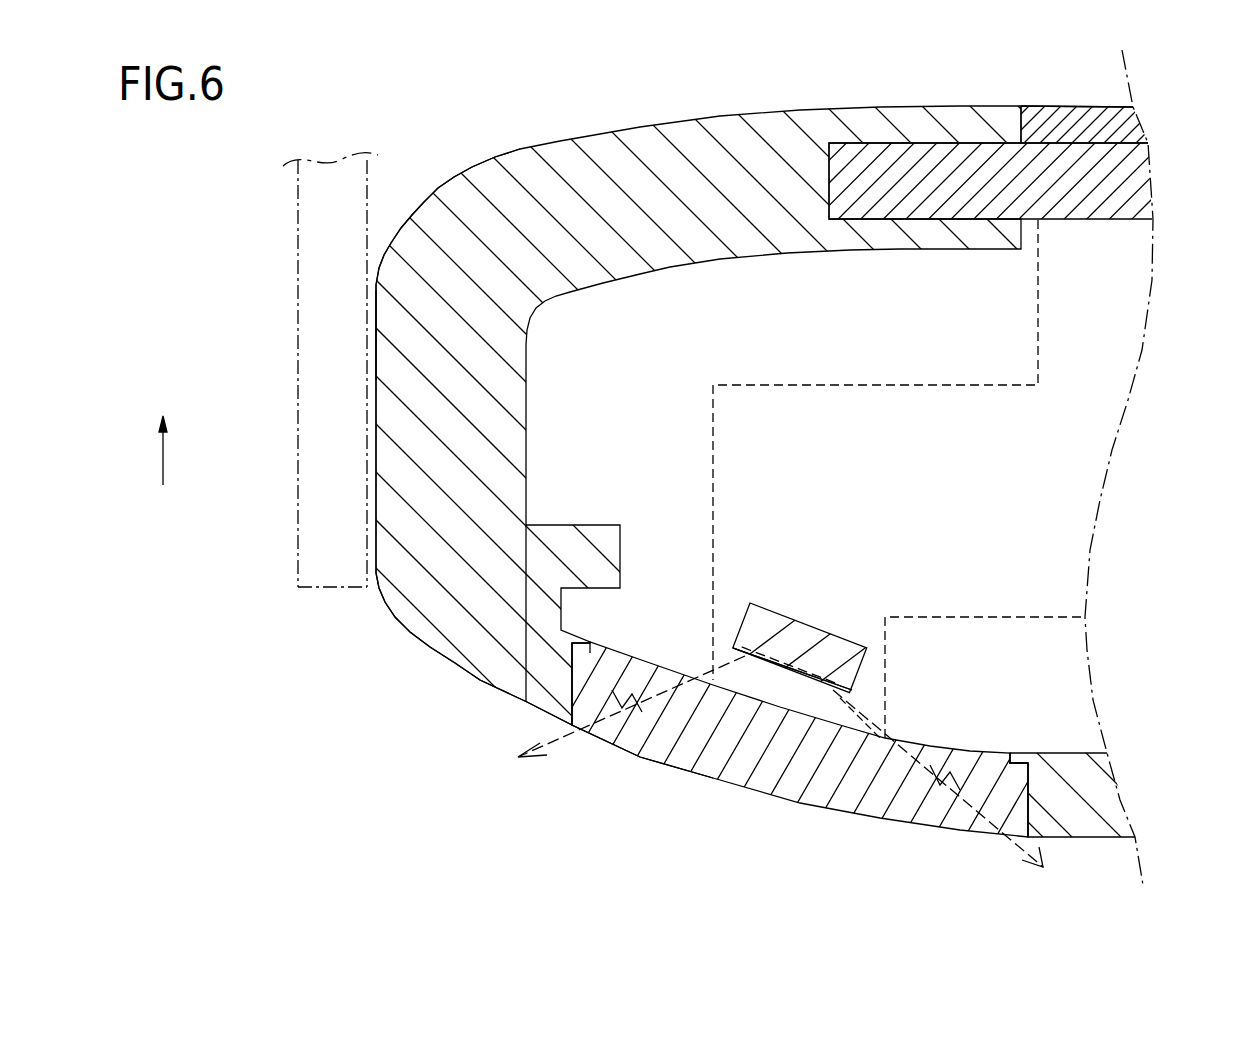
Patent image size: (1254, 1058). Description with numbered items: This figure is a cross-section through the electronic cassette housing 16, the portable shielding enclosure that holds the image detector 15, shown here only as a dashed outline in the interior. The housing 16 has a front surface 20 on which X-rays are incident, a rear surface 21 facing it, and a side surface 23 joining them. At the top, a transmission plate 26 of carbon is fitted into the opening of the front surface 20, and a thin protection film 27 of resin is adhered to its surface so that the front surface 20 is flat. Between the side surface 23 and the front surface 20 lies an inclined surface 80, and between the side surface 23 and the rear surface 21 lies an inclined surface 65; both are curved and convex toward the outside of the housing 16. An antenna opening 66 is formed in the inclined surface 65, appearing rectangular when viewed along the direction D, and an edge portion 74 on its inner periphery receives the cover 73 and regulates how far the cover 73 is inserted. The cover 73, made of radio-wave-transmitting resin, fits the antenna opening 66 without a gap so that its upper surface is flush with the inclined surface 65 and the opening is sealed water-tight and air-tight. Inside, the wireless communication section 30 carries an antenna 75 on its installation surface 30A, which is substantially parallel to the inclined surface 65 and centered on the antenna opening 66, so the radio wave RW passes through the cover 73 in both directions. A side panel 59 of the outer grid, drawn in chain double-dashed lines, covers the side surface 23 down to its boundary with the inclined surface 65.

The image detector 15 is at (1001, 384).
The housing 16 is at (516, 140).
The front surface 20 is at (960, 183).
The rear surface 21 is at (1124, 842).
The side surface 23 is at (375, 320).
The transmission plate 26 is at (1136, 186).
The protection film 27 is at (1133, 127).
The wireless communication section 30 is at (781, 608).
The installation surface 30A is at (815, 680).
The side panel 59 is at (303, 198).
The inclined surface 65 is at (428, 647).
The antenna opening 66 is at (810, 820).
The cover 73 is at (655, 756).
The edge portion 74 is at (1013, 758).
The antenna 75 is at (805, 650).
The inclined surface 80 is at (452, 177).
The direction D is at (163, 437).
The radio wave RW is at (538, 752).